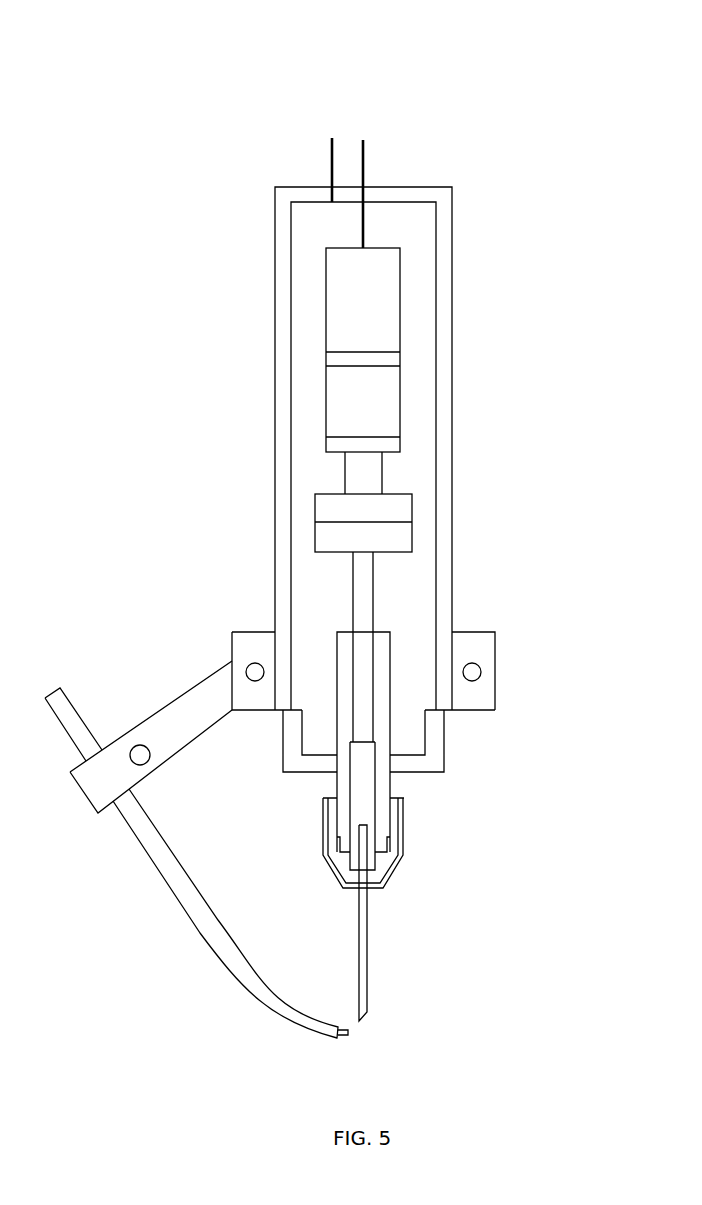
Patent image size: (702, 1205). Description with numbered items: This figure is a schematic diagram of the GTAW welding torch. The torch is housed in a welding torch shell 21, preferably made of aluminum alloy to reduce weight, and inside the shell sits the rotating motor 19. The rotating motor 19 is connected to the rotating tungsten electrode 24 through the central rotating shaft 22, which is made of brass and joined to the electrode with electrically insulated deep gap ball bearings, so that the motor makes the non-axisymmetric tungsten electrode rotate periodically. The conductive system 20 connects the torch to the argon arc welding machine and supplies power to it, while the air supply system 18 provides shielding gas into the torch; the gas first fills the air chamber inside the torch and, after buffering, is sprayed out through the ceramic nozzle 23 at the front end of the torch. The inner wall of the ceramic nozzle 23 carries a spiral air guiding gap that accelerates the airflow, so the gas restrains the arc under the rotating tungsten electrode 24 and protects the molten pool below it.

The air supply system 18 is at (325, 163).
The rotating motor 19 is at (339, 322).
The conductive system 20 is at (367, 165).
The welding torch shell 21 is at (448, 293).
The central rotating shaft 22 is at (368, 622).
The ceramic nozzle 23 is at (404, 835).
The rotating tungsten electrode 24 is at (370, 990).